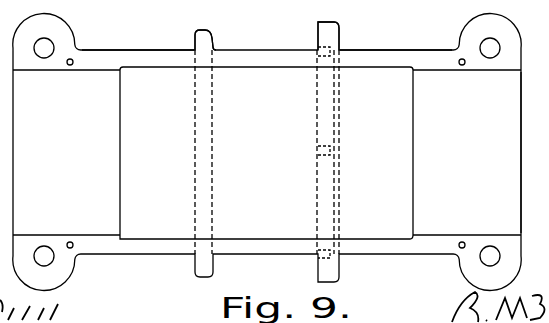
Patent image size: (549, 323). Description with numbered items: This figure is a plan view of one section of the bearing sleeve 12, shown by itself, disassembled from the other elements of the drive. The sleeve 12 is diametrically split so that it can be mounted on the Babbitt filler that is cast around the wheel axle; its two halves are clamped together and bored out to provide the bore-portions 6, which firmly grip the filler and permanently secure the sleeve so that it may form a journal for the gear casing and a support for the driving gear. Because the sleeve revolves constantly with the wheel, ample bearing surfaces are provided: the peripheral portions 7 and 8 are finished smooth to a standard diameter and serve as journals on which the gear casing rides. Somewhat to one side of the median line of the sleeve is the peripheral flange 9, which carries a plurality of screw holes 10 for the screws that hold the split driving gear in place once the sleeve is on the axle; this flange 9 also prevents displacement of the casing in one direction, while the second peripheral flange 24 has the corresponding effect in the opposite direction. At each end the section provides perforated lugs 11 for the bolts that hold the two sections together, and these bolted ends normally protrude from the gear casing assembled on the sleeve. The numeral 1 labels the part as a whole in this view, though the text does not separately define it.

The plate 1 is at (20, 47).
The bore-portions 6 is at (267, 152).
The peripheral portion 7 is at (385, 50).
The peripheral portion 8 is at (137, 45).
The peripheral flange 9 is at (322, 22).
The screw holes 10 is at (320, 159).
The perforated lugs 11 is at (524, 32).
The bearing sleeve 12 is at (524, 129).
The peripheral flange 24 is at (199, 30).